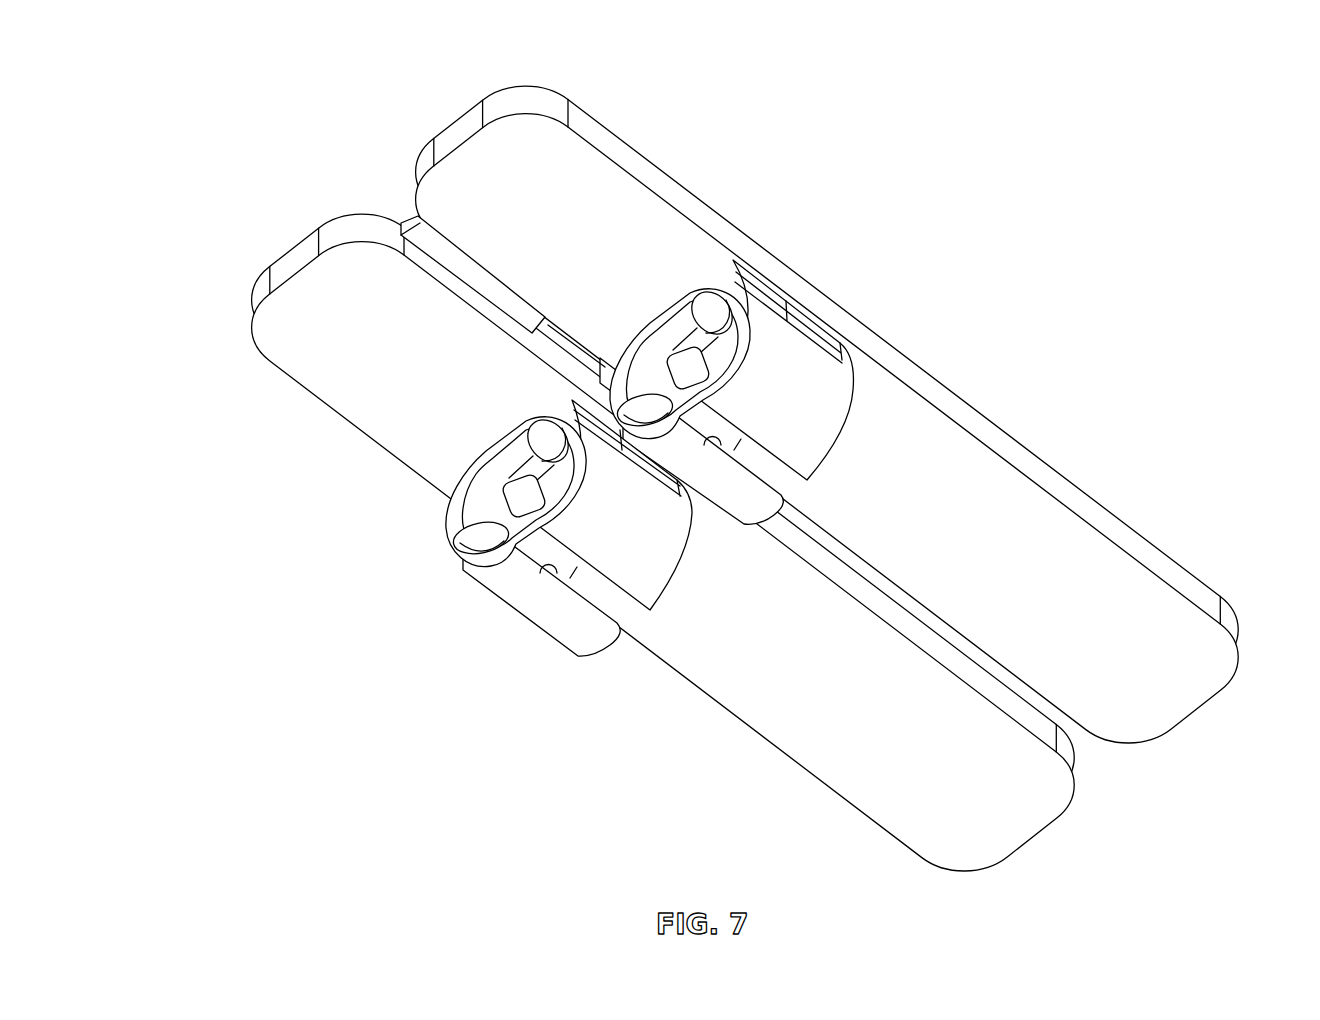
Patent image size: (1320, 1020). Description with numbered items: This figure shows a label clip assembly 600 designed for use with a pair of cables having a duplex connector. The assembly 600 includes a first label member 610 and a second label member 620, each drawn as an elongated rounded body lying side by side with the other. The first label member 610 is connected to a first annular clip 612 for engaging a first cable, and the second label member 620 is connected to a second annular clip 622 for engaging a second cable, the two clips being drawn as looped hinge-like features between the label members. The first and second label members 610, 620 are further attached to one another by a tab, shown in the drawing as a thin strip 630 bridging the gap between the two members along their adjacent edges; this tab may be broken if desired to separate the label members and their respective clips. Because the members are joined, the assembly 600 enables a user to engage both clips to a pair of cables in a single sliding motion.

The assembly 600 is at (258, 50).
The first label member 610 is at (852, 740).
The first annular clip 612 is at (530, 605).
The second label member 620 is at (1038, 517).
The second annular clip 622 is at (790, 352).
The hinge 630 is at (477, 280).